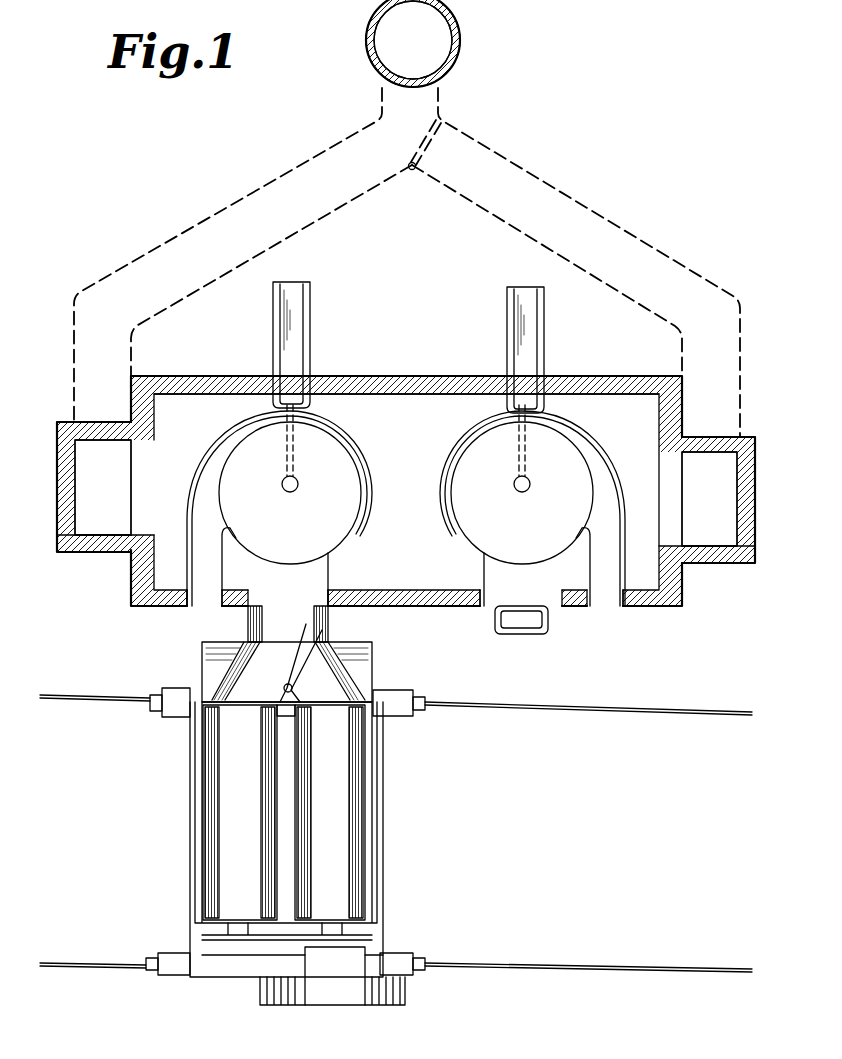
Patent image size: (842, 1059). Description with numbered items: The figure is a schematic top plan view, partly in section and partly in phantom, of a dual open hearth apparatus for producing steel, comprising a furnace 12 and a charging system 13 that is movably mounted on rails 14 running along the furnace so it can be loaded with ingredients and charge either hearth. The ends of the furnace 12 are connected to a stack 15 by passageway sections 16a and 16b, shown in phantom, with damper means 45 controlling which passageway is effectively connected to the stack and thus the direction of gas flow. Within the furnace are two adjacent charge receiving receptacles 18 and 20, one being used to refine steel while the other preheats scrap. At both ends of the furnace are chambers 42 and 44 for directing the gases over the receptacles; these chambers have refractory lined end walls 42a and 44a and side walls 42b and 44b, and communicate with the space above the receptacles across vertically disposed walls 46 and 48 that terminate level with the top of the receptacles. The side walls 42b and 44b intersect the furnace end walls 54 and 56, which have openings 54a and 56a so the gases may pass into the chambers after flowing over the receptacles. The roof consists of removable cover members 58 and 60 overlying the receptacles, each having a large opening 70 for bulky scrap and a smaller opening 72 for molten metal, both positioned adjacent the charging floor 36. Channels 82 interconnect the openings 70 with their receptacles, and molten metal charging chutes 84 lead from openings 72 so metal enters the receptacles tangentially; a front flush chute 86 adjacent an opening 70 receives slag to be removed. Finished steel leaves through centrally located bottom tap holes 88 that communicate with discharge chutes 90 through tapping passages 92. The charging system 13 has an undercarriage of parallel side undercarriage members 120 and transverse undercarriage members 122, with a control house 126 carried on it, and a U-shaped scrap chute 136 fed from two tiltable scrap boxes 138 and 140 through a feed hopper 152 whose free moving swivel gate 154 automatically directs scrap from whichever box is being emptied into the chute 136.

The furnace 12 is at (432, 351).
The charging system 13 is at (386, 838).
The rails 14 is at (656, 714).
The stack 15 is at (458, 50).
The passageway section 16a is at (236, 196).
The passageway section 16b is at (593, 222).
The charge receiving receptacle 18 is at (345, 453).
The charge receiving receptacle 20 is at (570, 456).
The charging floor 36 is at (578, 857).
The chamber 42 is at (84, 487).
The end wall 42a is at (82, 463).
The side wall 42b is at (95, 442).
The chamber 44 is at (757, 492).
The end wall 44a is at (734, 518).
The side wall 44b is at (745, 459).
The damper means 45 is at (452, 136).
The vertically disposed wall 46 is at (146, 488).
The vertically disposed wall 48 is at (668, 498).
The end wall 54 is at (131, 390).
The opening 54a is at (680, 545).
The end wall 56 is at (684, 398).
The opening 56a is at (128, 536).
The cover member 58 is at (347, 406).
The cover member 60 is at (568, 410).
The opening 70 is at (330, 610).
The opening 72 is at (190, 606).
The channel 82 is at (344, 552).
The molten metal charging chute 84 is at (205, 496).
The front flush chute 86 is at (540, 634).
The bottom tap hole 88 is at (299, 486).
The discharge chute 90 is at (292, 308).
The tapping passage 92 is at (288, 432).
The side undercarriage member 120 is at (414, 704).
The transverse undercarriage member 122 is at (192, 816).
The control house 126 is at (323, 996).
The chute 136 is at (266, 600).
The scrap box 138 is at (350, 770).
The scrap box 140 is at (224, 784).
The feed hopper 152 is at (368, 669).
The swivel gate 154 is at (300, 666).